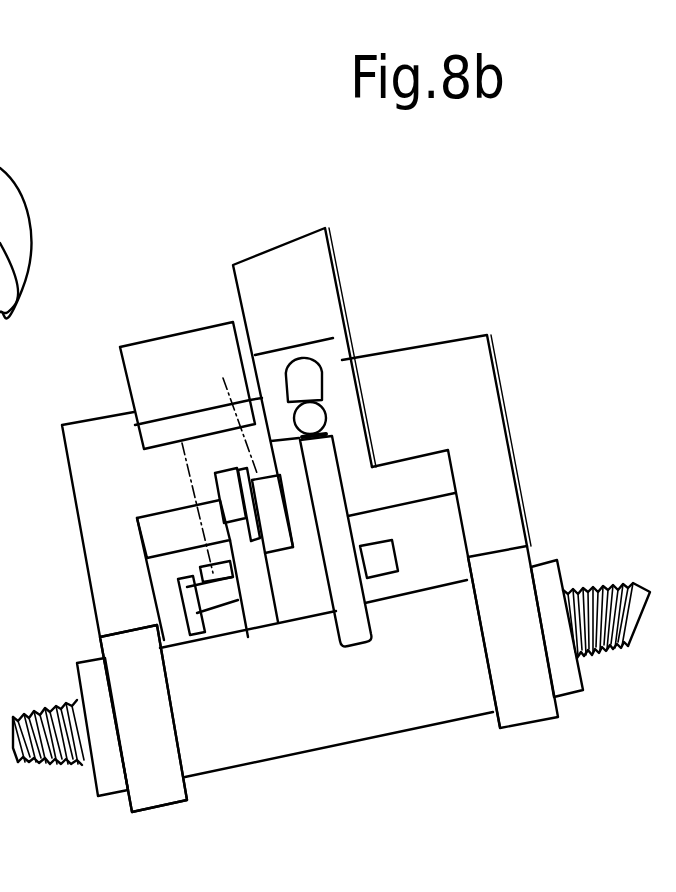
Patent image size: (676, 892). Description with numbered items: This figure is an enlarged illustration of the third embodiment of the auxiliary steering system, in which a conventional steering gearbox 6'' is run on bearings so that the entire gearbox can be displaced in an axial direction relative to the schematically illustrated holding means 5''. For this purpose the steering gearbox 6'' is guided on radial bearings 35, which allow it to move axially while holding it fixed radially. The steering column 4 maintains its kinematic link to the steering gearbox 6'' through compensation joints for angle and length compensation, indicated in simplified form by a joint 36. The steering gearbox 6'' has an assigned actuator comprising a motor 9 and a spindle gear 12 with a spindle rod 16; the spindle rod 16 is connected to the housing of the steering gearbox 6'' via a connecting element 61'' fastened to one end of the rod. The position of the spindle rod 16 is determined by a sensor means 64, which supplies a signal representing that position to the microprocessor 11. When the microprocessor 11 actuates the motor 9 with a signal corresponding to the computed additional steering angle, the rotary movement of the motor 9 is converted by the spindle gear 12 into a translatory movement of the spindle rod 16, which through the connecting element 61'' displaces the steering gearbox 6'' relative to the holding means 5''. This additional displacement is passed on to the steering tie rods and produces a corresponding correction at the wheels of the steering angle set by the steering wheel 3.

The steering wheel 3 is at (15, 216).
The steering column 4 is at (307, 382).
The holding means 5'' is at (304, 357).
The steering gearbox 6'' is at (326, 704).
The motor 9 is at (230, 495).
The microprocessor 11 is at (162, 370).
The spindle gear 12 is at (264, 604).
The spindle rod 16 is at (380, 567).
The radial bearings 35 is at (163, 792).
The joint 36 is at (318, 422).
The connecting element 61'' is at (113, 686).
The sensor means 64 is at (215, 573).